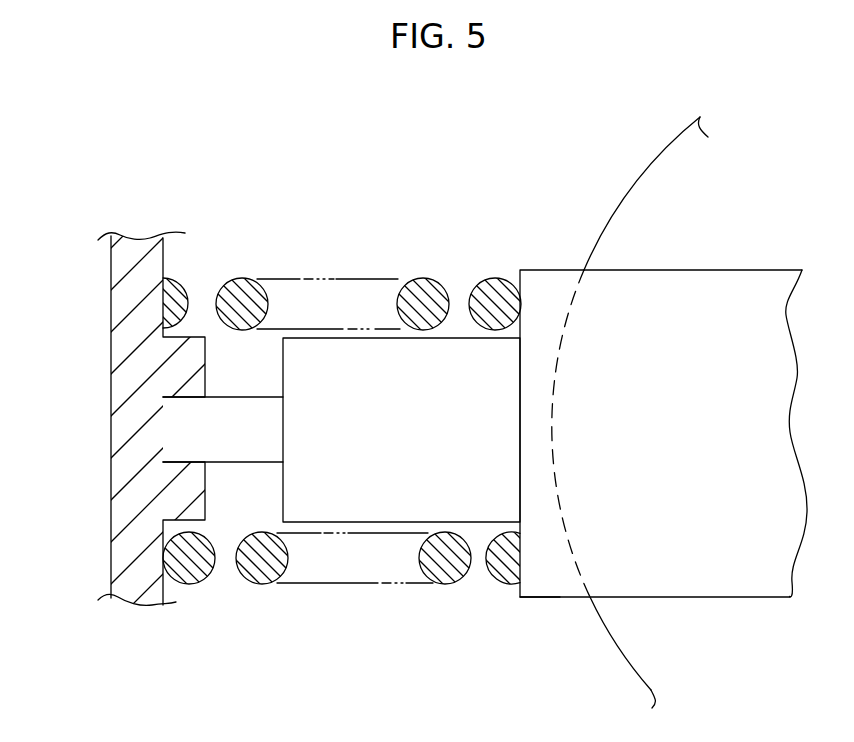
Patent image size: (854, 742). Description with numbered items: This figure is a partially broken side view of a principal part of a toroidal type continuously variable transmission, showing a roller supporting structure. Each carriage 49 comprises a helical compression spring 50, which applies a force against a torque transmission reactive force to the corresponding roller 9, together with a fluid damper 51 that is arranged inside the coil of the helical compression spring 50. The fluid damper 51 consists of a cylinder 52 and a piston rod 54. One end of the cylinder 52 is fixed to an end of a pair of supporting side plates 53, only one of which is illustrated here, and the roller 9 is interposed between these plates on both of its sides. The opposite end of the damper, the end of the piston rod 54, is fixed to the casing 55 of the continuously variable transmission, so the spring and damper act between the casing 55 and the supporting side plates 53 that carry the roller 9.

The roller 9 is at (633, 190).
The carriage 49 is at (548, 597).
The helical compression spring 50 is at (423, 292).
The fluid damper 51 is at (370, 523).
The cylinder 52 is at (338, 362).
The supporting side plate 53 is at (707, 570).
The piston rod 54 is at (232, 447).
The casing 55 is at (120, 362).